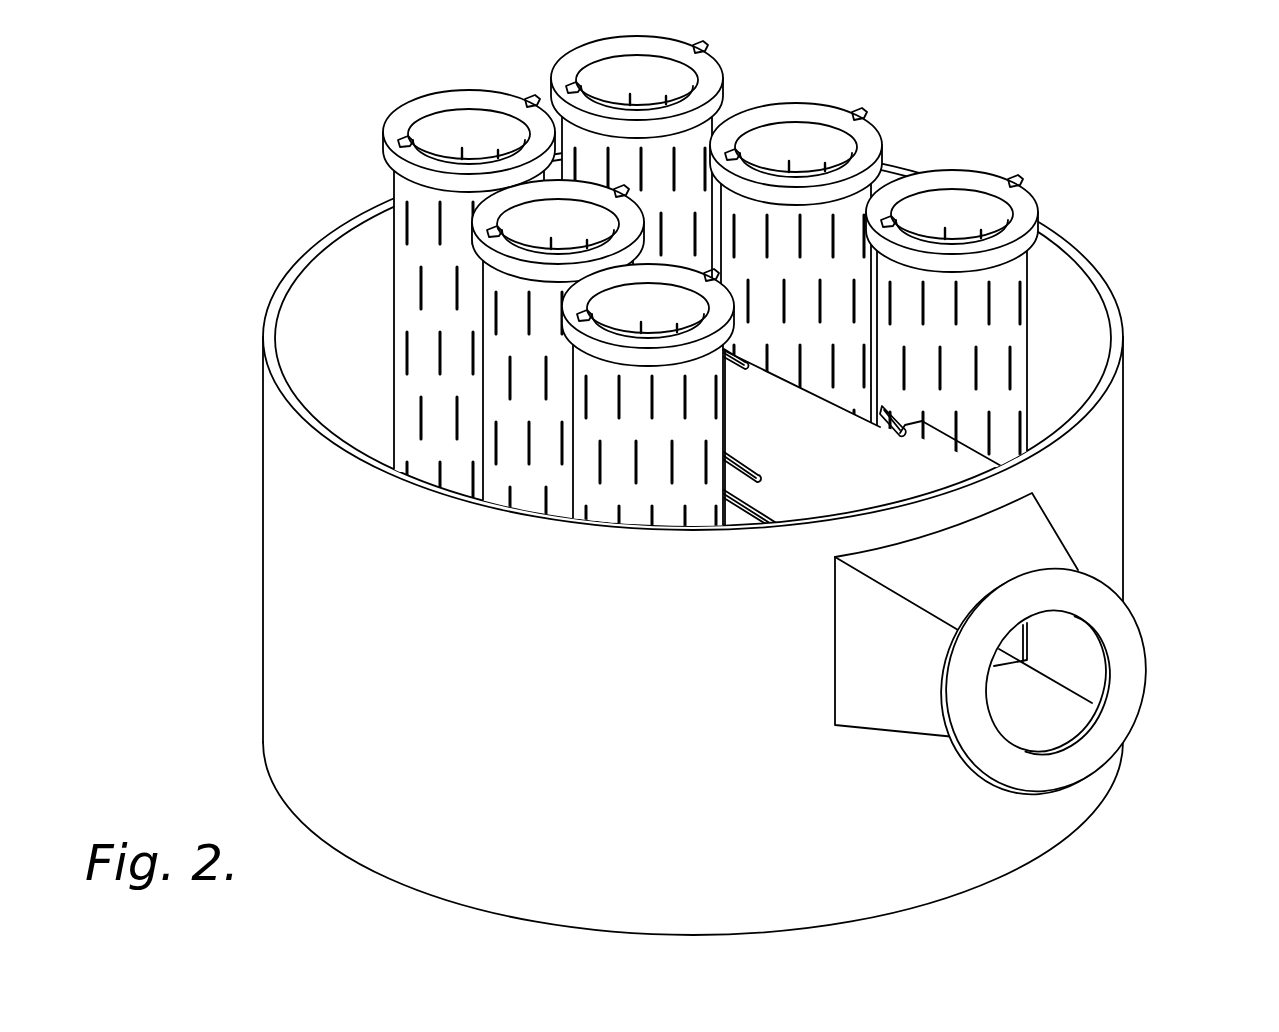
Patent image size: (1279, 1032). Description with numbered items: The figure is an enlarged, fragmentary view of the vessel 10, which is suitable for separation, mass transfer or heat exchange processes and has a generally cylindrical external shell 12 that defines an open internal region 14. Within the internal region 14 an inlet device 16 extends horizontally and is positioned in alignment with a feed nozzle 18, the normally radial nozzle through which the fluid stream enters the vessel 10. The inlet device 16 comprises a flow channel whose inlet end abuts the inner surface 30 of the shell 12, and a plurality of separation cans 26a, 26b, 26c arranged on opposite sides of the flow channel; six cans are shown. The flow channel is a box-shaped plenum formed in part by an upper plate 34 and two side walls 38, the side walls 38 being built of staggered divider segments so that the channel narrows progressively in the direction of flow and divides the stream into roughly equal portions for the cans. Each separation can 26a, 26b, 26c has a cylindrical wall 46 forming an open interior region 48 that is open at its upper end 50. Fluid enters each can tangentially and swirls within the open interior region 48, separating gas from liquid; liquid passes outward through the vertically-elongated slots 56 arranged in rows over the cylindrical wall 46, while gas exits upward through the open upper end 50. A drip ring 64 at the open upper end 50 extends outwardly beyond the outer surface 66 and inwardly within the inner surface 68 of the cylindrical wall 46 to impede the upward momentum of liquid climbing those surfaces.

The vessel 10 is at (1132, 449).
The external shell 12 is at (1118, 308).
The open internal region 14 is at (1076, 383).
The inlet device 16 is at (863, 465).
The feed nozzle 18 is at (1128, 636).
The first separation can 26a is at (835, 381).
The second separation can 26b is at (685, 320).
The third separation can 26c is at (547, 275).
The inner surface of the shell 30 is at (1092, 291).
The upper plate 34 is at (897, 477).
The side walls 38 is at (741, 517).
The cylindrical wall 46 is at (676, 507).
The open interior region 48 is at (962, 222).
The open upper end 50 is at (990, 222).
The slots 56 is at (420, 292).
The drip ring 64 is at (590, 68).
The outer surface of the cylindrical wall 66 is at (770, 335).
The inner surface of the cylindrical wall 68 is at (794, 150).